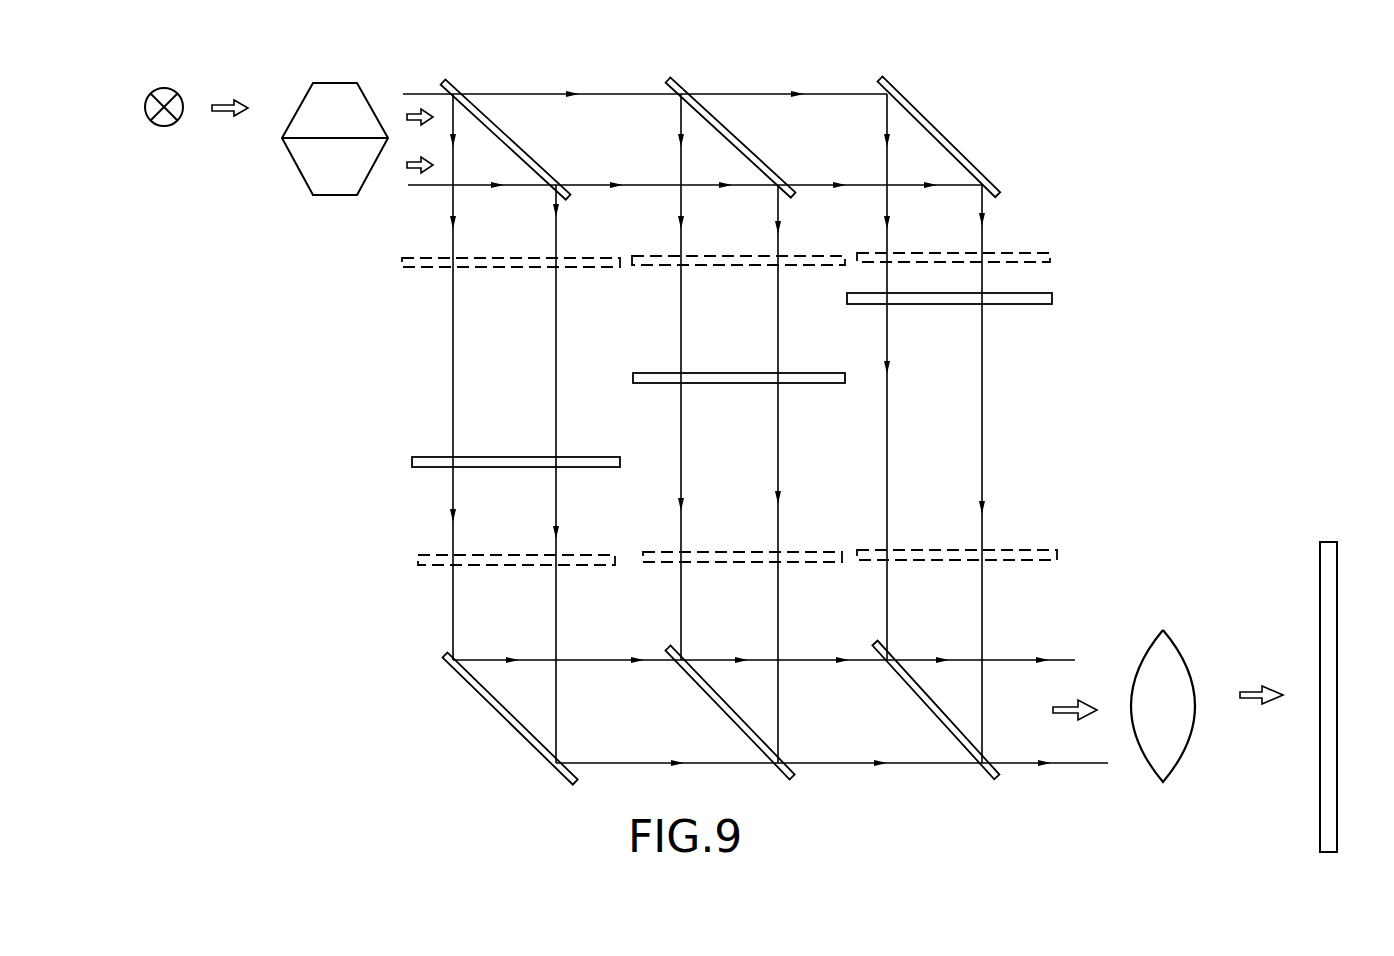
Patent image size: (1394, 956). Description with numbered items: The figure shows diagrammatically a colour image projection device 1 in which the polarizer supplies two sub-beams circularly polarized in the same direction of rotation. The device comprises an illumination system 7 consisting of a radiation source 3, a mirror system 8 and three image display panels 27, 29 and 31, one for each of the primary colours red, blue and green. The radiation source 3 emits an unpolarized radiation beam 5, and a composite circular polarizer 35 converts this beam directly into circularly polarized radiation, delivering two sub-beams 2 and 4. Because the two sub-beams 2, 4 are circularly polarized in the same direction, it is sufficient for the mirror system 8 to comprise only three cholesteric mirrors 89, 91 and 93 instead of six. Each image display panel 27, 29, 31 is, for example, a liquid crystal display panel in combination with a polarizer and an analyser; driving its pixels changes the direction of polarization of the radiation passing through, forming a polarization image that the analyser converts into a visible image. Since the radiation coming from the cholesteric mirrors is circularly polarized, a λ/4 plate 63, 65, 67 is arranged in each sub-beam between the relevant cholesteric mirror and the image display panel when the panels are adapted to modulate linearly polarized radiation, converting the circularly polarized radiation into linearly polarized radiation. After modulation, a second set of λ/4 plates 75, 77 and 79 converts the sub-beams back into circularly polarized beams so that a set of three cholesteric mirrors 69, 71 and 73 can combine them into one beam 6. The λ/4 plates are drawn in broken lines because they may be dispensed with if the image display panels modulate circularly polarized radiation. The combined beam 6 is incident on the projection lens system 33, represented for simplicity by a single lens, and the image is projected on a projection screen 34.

The colour image projection device 1 is at (352, 730).
The sub-beam 2 is at (405, 114).
The radiation source 3 is at (165, 88).
The sub-beam 4 is at (408, 168).
The unpolarized radiation beam 5 is at (212, 105).
The beam 6 is at (1085, 716).
The illumination system 7 is at (297, 453).
The mirror system 8 is at (998, 123).
The image display panel 27 is at (600, 467).
The image display panel 29 is at (735, 384).
The image display panel 31 is at (930, 304).
The projection lens system 33 is at (1163, 782).
The projection screen 34 is at (1333, 852).
The composite circular polarizer 35 is at (345, 72).
The λ/4 plate 63 is at (402, 263).
The λ/4 plate 65 is at (664, 266).
The λ/4 plate 67 is at (1050, 258).
The cholesteric mirror 69 is at (564, 780).
The cholesteric mirror 71 is at (785, 776).
The cholesteric mirror 73 is at (990, 777).
The λ/4 plate 75 is at (528, 566).
The λ/4 plate 77 is at (736, 566).
The λ/4 plate 79 is at (940, 565).
The cholesteric mirror 89 is at (456, 86).
The cholesteric mirror 91 is at (684, 84).
The cholesteric mirror 93 is at (896, 84).